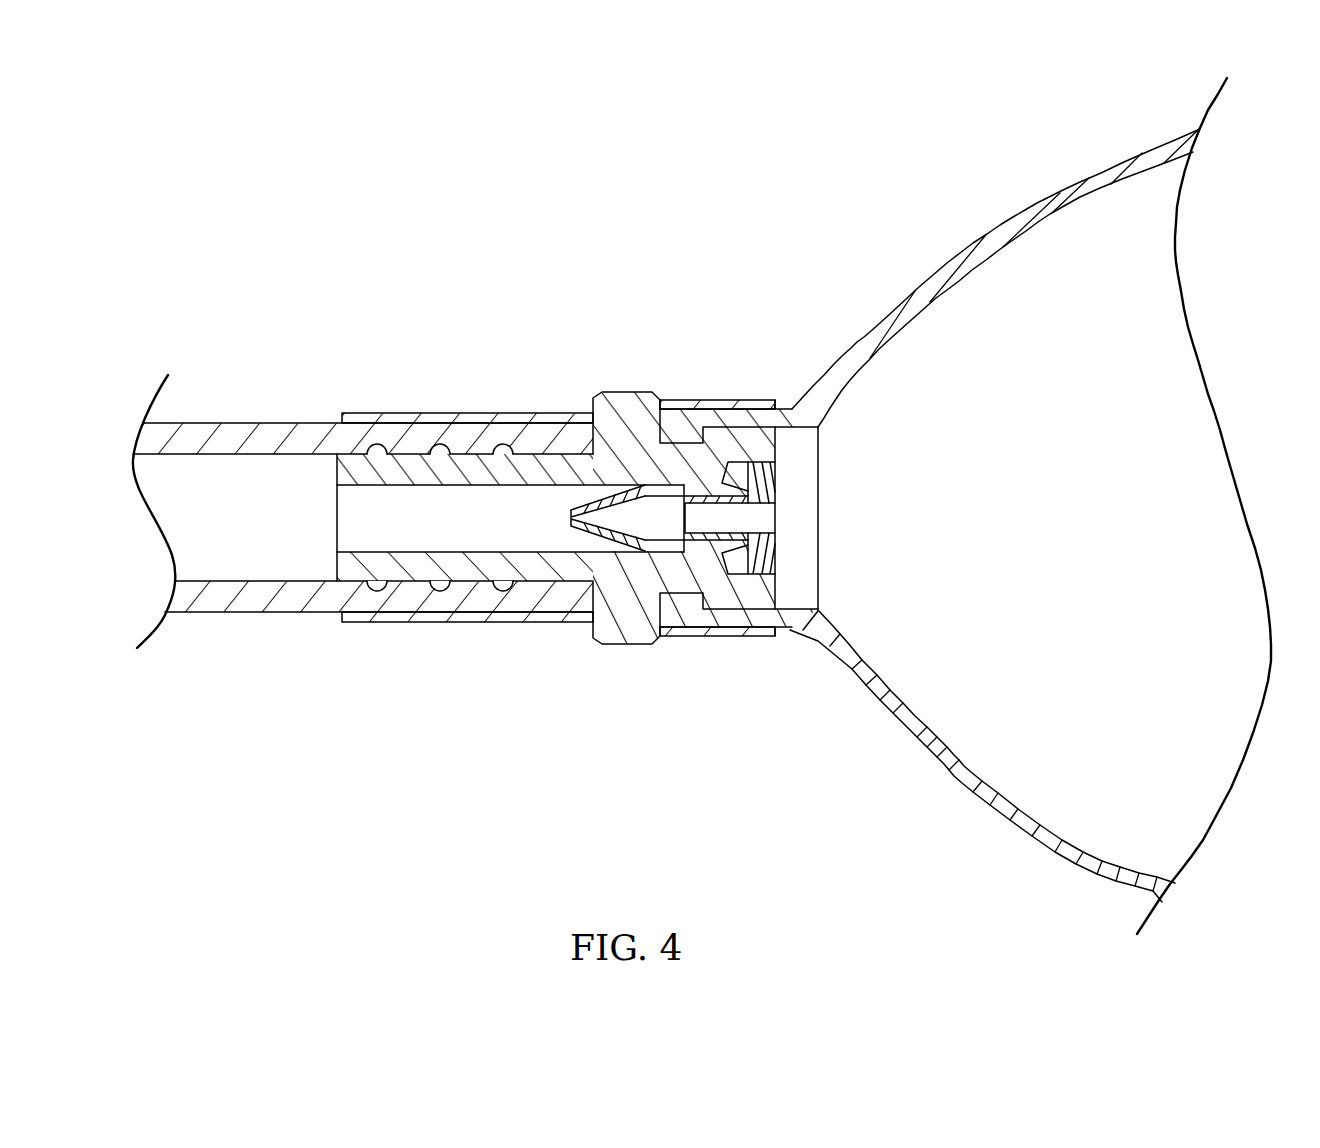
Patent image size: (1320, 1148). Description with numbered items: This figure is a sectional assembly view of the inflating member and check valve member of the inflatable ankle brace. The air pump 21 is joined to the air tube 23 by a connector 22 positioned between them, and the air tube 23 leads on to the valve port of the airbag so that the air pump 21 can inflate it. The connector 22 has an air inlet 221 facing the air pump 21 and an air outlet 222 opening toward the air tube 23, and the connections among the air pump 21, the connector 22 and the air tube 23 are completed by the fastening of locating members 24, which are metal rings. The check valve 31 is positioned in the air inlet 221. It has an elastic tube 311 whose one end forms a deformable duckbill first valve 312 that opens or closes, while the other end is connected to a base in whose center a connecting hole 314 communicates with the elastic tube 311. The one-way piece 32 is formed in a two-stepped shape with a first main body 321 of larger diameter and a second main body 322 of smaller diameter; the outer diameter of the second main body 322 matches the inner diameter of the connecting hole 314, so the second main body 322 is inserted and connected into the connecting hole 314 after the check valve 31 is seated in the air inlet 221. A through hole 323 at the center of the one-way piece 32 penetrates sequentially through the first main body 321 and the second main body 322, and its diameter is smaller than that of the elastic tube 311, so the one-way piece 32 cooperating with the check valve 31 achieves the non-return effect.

The air pump 21 is at (1078, 187).
The connector 22 is at (433, 470).
The air inlet 221 is at (748, 430).
The air outlet 222 is at (343, 517).
The air tube 23 is at (210, 605).
The locating members 24 is at (408, 620).
The check valve 31 is at (572, 553).
The elastic tube 311 is at (668, 547).
The duckbill first valve 312 is at (571, 514).
The connecting hole 314 is at (700, 497).
The second main body 322 is at (735, 518).
The one-way piece 32 is at (785, 466).
The first main body 321 is at (773, 568).
The through hole 323 is at (773, 515).